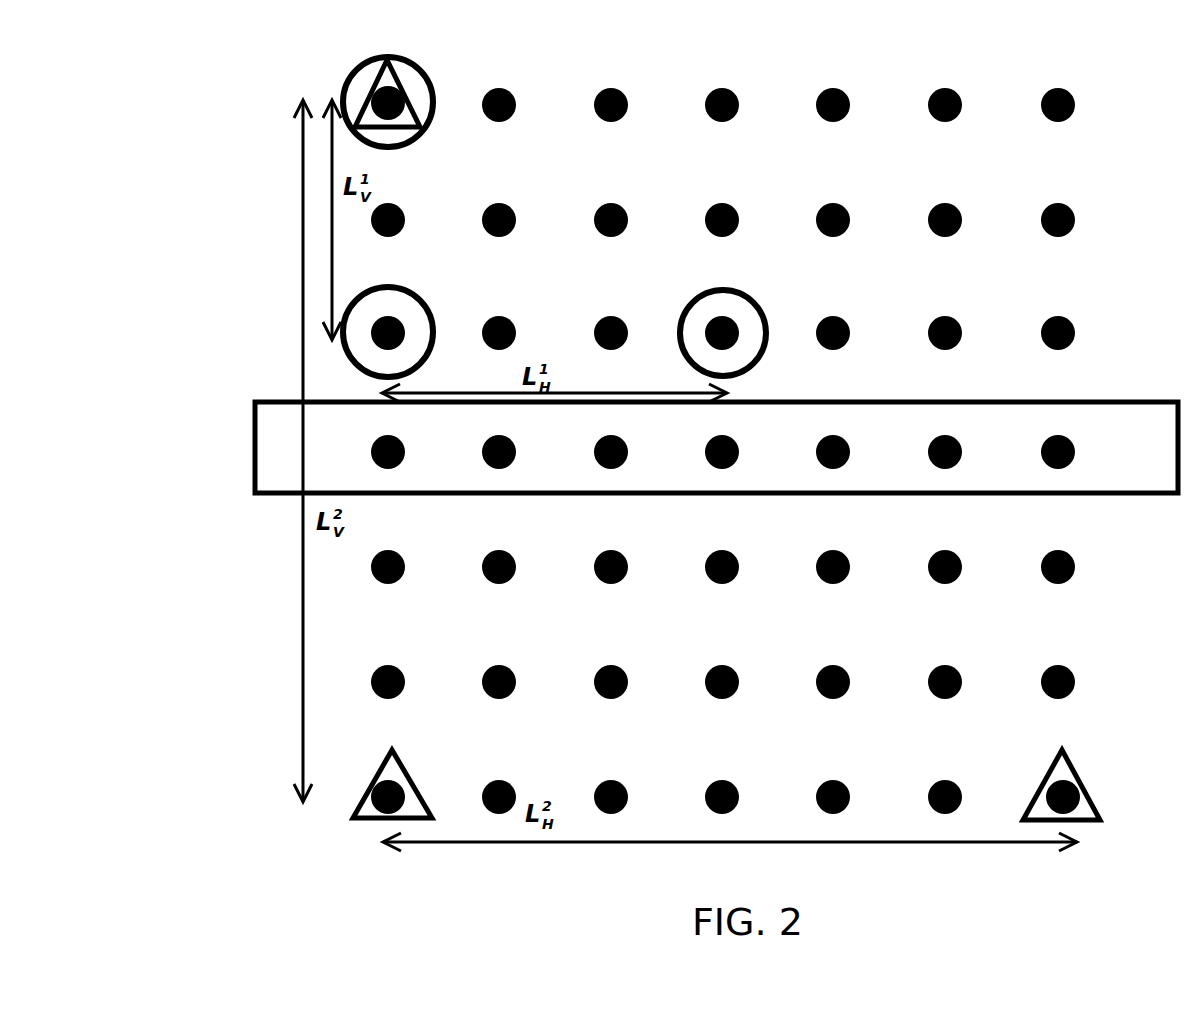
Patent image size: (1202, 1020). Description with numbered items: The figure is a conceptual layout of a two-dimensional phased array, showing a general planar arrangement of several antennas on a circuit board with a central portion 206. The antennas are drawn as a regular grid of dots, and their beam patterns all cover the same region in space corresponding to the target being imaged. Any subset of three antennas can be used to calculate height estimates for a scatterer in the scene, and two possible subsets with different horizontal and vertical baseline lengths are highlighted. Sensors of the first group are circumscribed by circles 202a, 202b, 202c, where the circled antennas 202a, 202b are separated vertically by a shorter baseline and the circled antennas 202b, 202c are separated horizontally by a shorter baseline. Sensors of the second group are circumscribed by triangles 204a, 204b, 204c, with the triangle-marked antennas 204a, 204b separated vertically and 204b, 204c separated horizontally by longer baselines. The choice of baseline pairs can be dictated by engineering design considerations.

The circle-circumscribed antenna sensor 202a is at (345, 90).
The circle-circumscribed antenna sensor 202b is at (417, 290).
The circle-circumscribed antenna sensor 202c is at (760, 303).
The triangle-circumscribed antenna sensor 204a is at (410, 100).
The triangle-circumscribed antenna sensor 204b is at (410, 772).
The triangle-circumscribed antenna sensor 204c is at (1078, 777).
The central portion of circuit board 206 is at (277, 398).